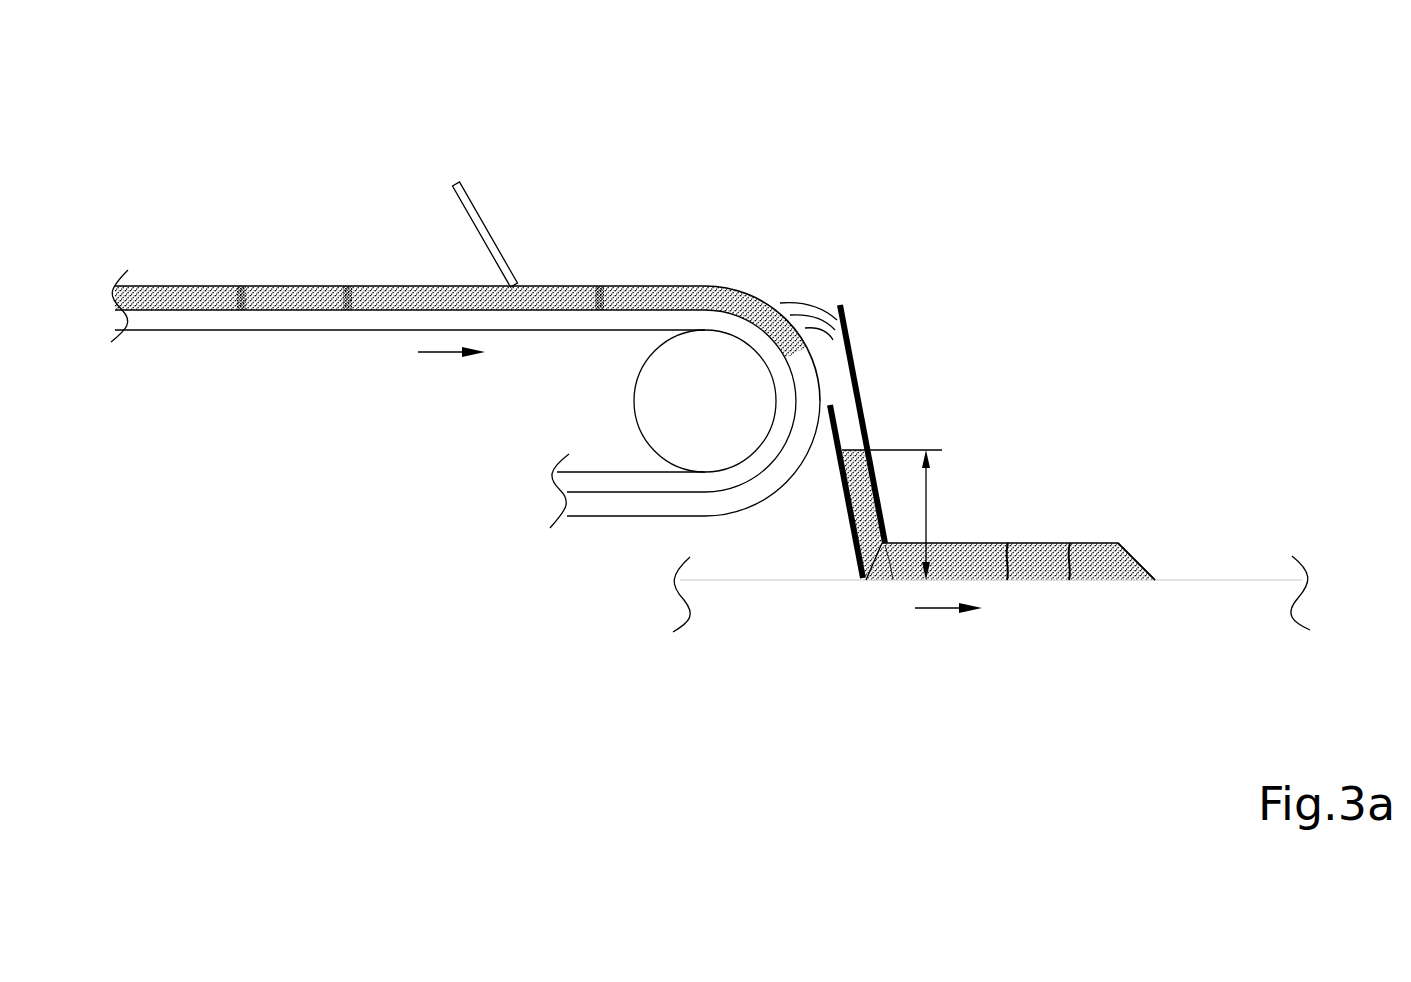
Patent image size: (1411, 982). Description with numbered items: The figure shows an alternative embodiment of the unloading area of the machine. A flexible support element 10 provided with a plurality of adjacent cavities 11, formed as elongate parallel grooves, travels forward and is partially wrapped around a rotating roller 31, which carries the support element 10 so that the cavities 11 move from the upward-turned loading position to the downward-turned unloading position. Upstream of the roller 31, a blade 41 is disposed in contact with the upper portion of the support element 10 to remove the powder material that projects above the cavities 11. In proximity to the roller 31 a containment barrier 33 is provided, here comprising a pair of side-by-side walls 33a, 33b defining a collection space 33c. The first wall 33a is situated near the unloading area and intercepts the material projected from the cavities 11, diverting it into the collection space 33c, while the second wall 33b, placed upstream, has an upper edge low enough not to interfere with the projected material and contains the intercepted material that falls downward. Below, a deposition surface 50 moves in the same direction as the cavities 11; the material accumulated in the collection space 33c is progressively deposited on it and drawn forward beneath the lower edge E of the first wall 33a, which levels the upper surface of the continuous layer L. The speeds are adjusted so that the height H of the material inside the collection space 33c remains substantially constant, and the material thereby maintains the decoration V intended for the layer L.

The support element 10 is at (300, 270).
The cavities 11 is at (185, 296).
The rotating roller 31 is at (655, 415).
The blade 41 is at (490, 242).
The containment barrier 33 is at (858, 292).
The first wall 33a is at (858, 375).
The second wall 33b is at (845, 510).
The collection space 33c is at (840, 397).
The deposition surface 50 is at (1201, 578).
The height H is at (925, 513).
The continuous layer L is at (1127, 562).
The lower edge E is at (888, 550).
The decoration V is at (1007, 580).